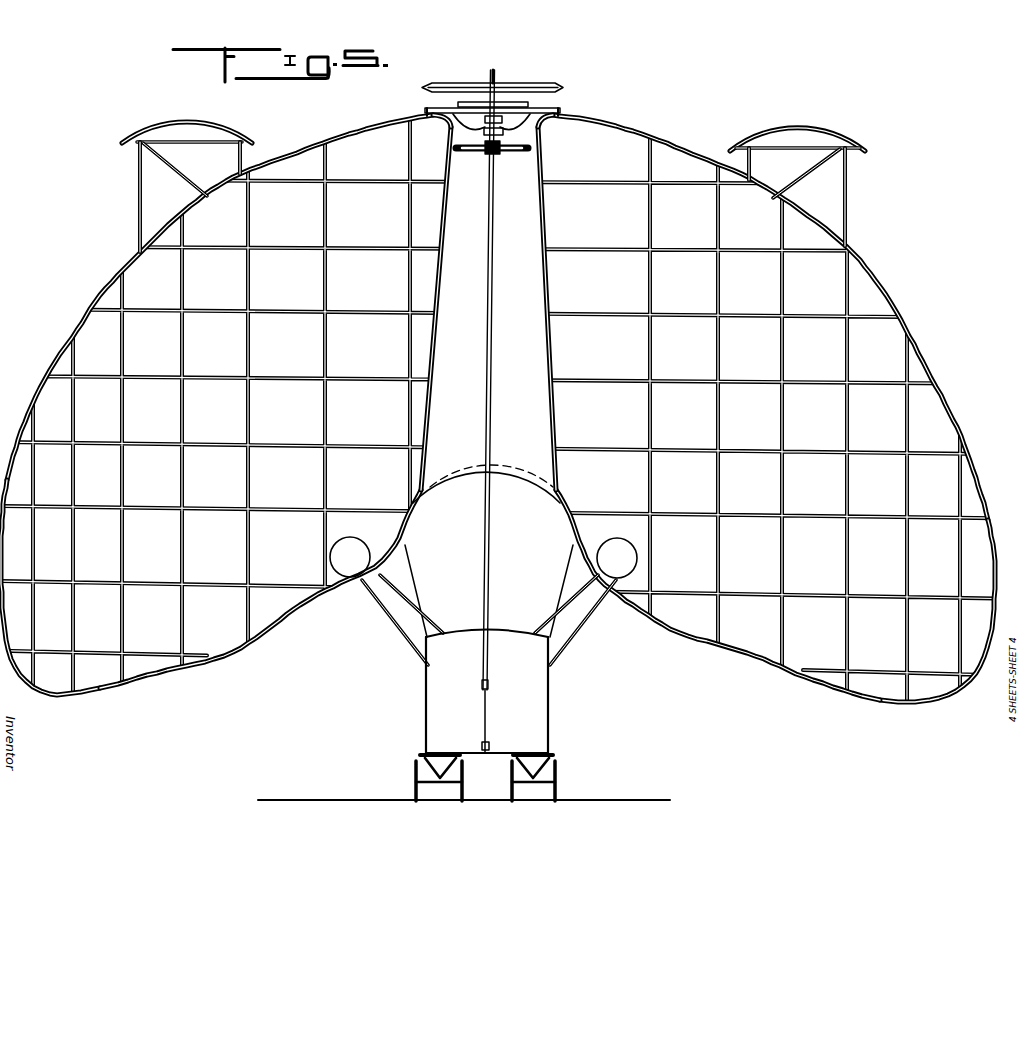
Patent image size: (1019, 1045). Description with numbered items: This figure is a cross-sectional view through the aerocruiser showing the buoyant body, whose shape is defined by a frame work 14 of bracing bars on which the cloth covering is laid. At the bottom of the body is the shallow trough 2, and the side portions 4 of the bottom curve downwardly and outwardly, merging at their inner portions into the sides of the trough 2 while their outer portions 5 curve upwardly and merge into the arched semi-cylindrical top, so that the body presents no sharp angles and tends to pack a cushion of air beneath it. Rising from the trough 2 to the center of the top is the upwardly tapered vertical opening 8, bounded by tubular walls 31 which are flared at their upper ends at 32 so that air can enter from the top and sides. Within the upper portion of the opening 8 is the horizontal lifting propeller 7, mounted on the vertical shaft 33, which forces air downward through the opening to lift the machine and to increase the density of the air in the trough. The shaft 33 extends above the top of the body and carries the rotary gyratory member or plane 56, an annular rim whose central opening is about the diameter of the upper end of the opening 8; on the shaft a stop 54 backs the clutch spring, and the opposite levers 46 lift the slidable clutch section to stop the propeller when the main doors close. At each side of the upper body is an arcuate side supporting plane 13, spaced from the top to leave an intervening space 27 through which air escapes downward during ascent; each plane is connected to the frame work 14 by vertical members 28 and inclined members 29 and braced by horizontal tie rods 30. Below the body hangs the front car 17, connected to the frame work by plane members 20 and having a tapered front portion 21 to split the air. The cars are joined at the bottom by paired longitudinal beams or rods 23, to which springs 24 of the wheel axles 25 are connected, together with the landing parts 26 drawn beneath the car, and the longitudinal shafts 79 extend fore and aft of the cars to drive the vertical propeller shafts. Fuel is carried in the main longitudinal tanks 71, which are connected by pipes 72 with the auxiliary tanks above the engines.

The trough 2 is at (508, 482).
The side portions of the bottom 4 is at (233, 653).
The outer portions 5 is at (45, 698).
The lifting propeller 7 is at (524, 153).
The vertical opening 8 is at (470, 308).
The side supporting plane 13 is at (210, 124).
The frame work 14 is at (257, 311).
The front car 17 is at (540, 707).
The plane members 20 is at (396, 634).
The tapered front portion 21 is at (482, 707).
The longitudinal beams or rods 23 is at (420, 755).
The springs 24 is at (450, 752).
The axles 25 is at (443, 787).
The landing post 26 is at (413, 788).
The intervening spaces 27 is at (258, 147).
The vertical members 28 is at (138, 205).
The inclined members 29 is at (182, 176).
The horizontal braces or tie rods 30 is at (138, 150).
The tubular walls 31 is at (549, 303).
The flared upper ends 32 is at (540, 128).
The vertical shaft 33 is at (492, 380).
The levers 46 is at (494, 136).
The stop 54 is at (513, 103).
The rotary gyratory member or plane 56 is at (507, 84).
The main tanks 71 is at (342, 577).
The pipes 72 is at (428, 620).
The longitudinal shafts 79 is at (493, 753).